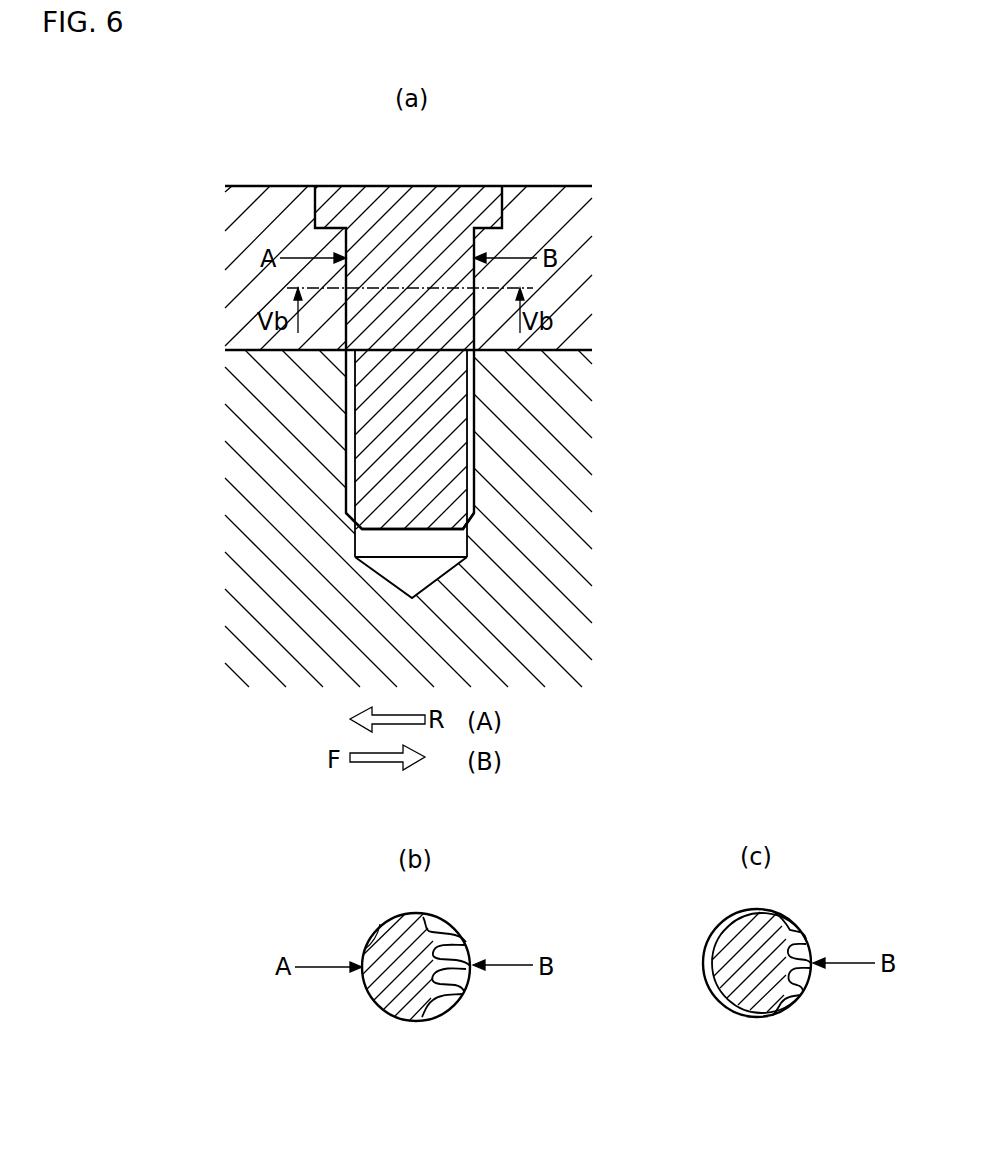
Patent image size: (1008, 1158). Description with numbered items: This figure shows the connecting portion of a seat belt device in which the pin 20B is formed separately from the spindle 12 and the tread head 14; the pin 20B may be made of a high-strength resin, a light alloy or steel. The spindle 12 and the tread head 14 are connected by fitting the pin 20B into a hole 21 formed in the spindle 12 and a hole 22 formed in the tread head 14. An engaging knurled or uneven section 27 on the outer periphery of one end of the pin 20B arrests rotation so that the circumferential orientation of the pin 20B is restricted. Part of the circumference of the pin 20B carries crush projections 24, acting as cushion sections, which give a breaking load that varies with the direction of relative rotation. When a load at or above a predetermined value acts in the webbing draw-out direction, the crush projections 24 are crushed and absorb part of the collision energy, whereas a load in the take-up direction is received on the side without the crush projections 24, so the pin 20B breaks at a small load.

The spindle 12 is at (567, 617).
The tread head 14 is at (577, 282).
The pin 20B is at (430, 191).
The hole 21 is at (352, 500).
The hole 22 is at (472, 262).
The crush projection 24 is at (453, 930).
The engaging knurled or uneven section 27 is at (357, 457).